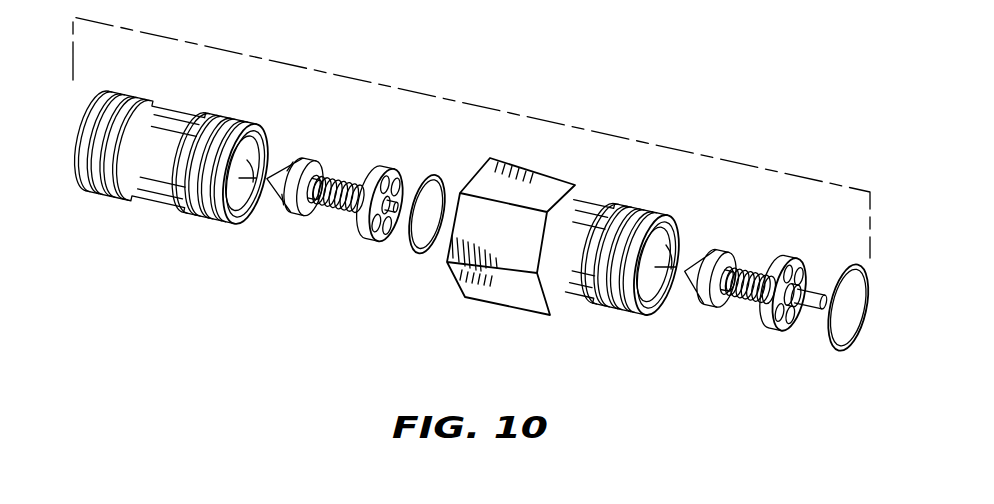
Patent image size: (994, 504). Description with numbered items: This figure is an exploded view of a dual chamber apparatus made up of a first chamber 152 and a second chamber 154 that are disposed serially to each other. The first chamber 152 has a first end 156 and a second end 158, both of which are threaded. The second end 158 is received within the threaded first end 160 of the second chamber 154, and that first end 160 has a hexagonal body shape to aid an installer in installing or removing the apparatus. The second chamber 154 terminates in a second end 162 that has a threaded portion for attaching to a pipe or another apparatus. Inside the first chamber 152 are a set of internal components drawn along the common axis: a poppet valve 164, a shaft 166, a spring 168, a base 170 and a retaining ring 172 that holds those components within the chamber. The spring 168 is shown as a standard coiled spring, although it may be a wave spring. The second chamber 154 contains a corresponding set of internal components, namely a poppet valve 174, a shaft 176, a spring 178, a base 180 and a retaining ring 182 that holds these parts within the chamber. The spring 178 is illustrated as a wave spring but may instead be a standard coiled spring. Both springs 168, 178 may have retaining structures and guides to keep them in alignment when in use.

The first chamber 152 is at (171, 175).
The second chamber 154 is at (567, 268).
The first end 156 is at (82, 190).
The second end 158 is at (192, 205).
The first end 160 is at (478, 287).
The second end 162 is at (607, 307).
The poppet valve 164 is at (282, 217).
The shaft 166 is at (322, 207).
The spring 168 is at (332, 182).
The base 170 is at (362, 238).
The retaining ring 172 is at (407, 258).
The poppet valve 174 is at (700, 305).
The shaft 176 is at (732, 298).
The spring 178 is at (758, 278).
The base 180 is at (777, 333).
The retaining ring 182 is at (833, 343).